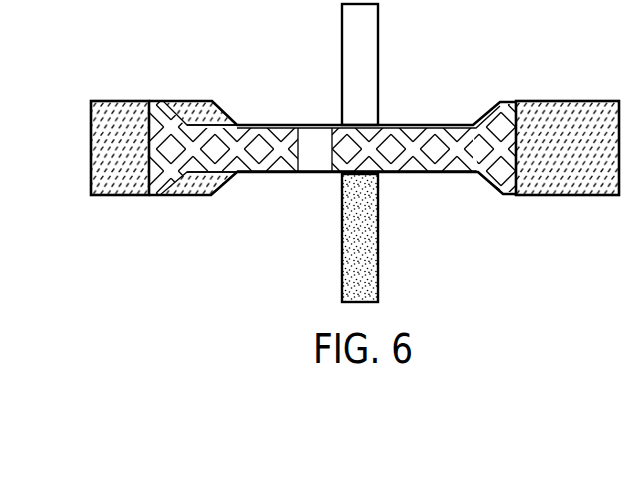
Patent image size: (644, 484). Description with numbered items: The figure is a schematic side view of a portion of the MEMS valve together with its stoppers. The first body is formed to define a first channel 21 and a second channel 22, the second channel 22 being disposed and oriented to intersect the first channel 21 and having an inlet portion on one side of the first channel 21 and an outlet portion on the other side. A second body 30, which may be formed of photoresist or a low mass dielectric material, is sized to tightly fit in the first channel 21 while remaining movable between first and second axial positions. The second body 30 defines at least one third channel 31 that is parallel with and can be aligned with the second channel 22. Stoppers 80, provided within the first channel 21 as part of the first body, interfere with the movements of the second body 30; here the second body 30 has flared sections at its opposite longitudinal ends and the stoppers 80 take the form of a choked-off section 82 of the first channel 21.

The first channel 21 is at (126, 100).
The second channel 22 is at (343, 54).
The second body 30 is at (437, 158).
The third channel 31 is at (318, 159).
The stoppers 80 is at (158, 187).
The choked-off section 82 is at (160, 103).